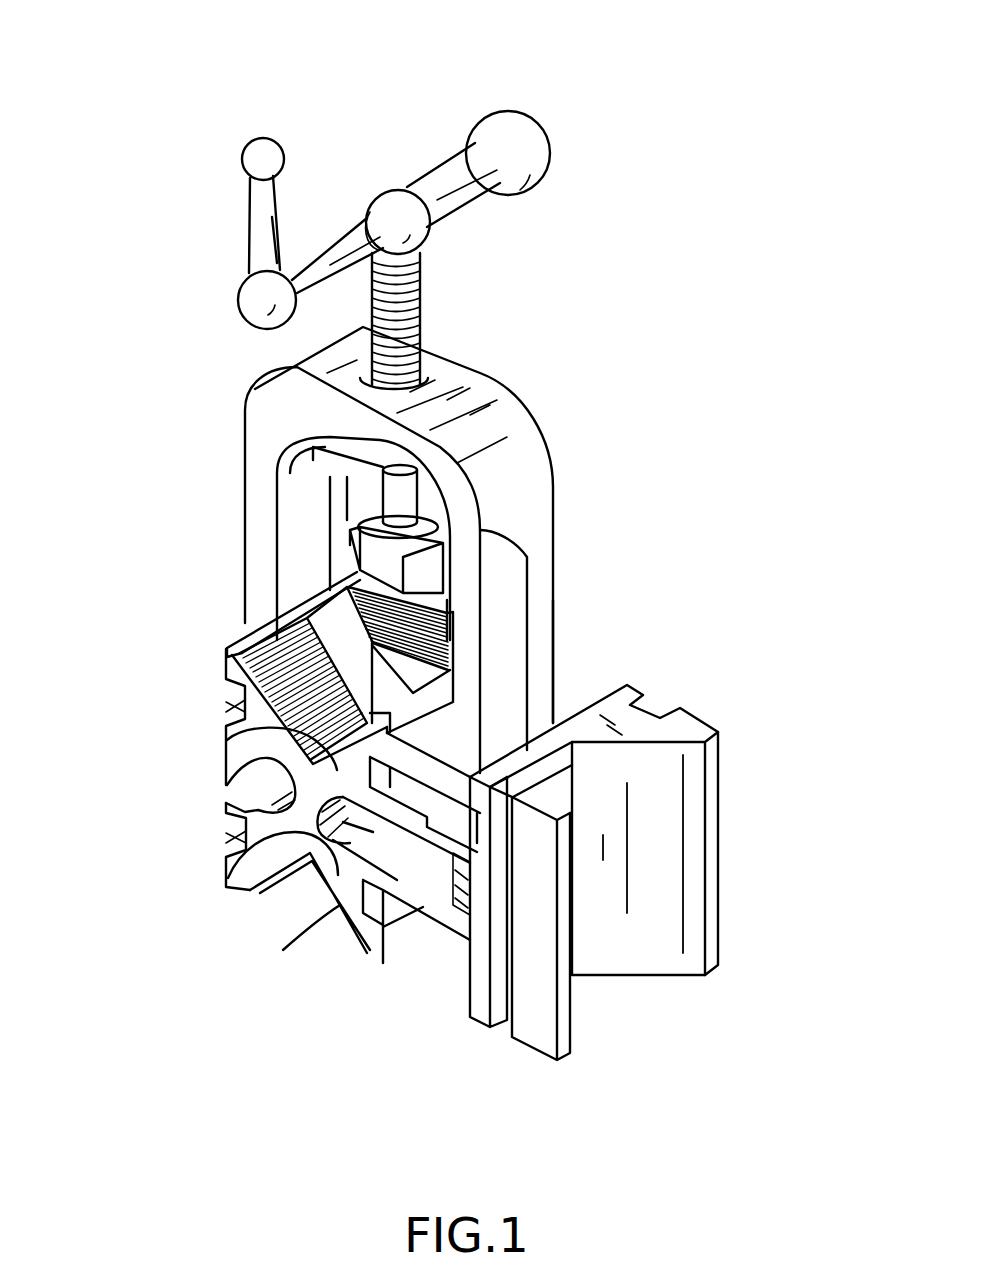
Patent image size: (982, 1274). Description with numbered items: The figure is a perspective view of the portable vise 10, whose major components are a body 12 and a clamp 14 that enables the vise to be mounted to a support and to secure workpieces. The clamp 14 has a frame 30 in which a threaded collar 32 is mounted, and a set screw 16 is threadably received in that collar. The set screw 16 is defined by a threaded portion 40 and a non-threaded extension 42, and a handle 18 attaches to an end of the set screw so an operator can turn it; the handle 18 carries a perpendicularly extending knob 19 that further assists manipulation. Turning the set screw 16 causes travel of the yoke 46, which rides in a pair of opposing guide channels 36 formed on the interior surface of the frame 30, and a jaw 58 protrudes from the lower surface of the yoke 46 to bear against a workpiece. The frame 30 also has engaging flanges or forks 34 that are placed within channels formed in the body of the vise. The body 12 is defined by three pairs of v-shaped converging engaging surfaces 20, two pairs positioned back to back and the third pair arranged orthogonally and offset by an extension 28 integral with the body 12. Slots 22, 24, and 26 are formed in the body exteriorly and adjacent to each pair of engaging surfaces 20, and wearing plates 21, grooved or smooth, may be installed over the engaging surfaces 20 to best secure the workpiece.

The vise 10 is at (690, 405).
The body 12 is at (213, 877).
The clamp 14 is at (653, 513).
The set screw 16 is at (446, 303).
The handle 18 is at (413, 152).
The knob 19 is at (263, 205).
The engaging surfaces 20 is at (290, 772).
The wearing plates 21 is at (285, 650).
The slot 22 is at (233, 698).
The slot 24 is at (233, 818).
The slot 26 is at (660, 702).
The extension 28 is at (427, 903).
The frame 30 is at (523, 500).
The threaded collar 32 is at (440, 372).
The engaging flanges or forks 34 is at (425, 782).
The guide channels 36 is at (317, 545).
The threaded portion 40 is at (428, 320).
The non-threaded extension 42 is at (392, 487).
The yoke 46 is at (358, 505).
The jaw 58 is at (437, 603).